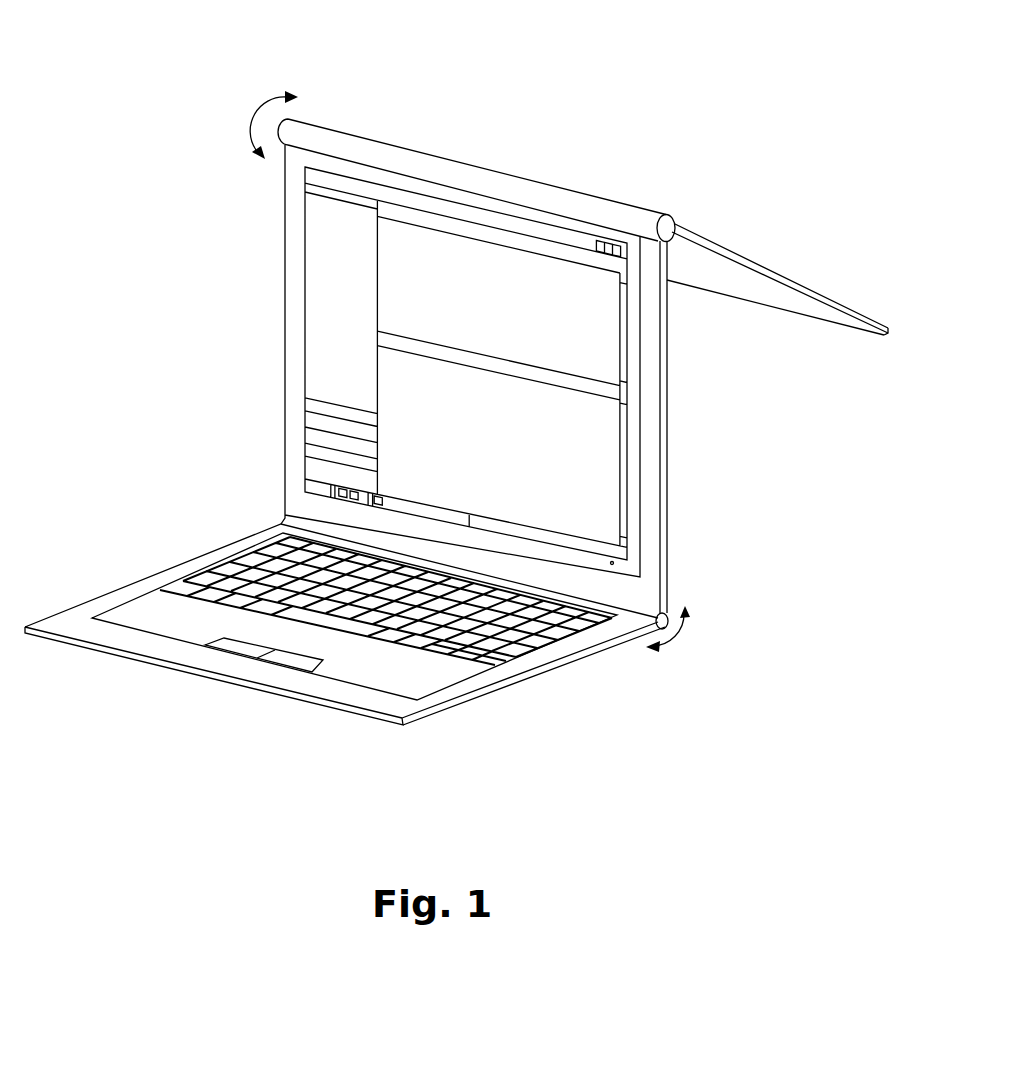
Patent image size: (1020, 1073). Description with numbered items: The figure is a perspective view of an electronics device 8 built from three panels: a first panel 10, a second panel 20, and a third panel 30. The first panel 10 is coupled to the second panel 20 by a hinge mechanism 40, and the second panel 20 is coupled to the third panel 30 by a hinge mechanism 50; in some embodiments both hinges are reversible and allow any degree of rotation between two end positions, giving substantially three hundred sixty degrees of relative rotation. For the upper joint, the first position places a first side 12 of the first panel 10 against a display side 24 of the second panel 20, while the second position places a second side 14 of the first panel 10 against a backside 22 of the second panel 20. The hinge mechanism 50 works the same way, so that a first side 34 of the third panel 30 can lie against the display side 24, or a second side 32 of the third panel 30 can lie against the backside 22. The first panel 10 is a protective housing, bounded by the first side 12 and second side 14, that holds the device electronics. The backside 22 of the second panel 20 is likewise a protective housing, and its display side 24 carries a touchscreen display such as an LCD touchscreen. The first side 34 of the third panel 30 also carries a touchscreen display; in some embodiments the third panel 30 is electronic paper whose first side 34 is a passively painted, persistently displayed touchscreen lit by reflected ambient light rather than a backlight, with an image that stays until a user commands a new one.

The electronics device 8 is at (172, 28).
The first panel 10 is at (880, 326).
The first side 12 is at (789, 281).
The second side 14 is at (792, 299).
The second panel 20 is at (665, 447).
The backside 22 is at (667, 360).
The display side 24 is at (330, 353).
The third panel 30 is at (480, 692).
The second side 32 is at (560, 665).
The first side 34 is at (390, 668).
The hinge mechanism 40 is at (584, 206).
The hinge mechanism 50 is at (669, 611).